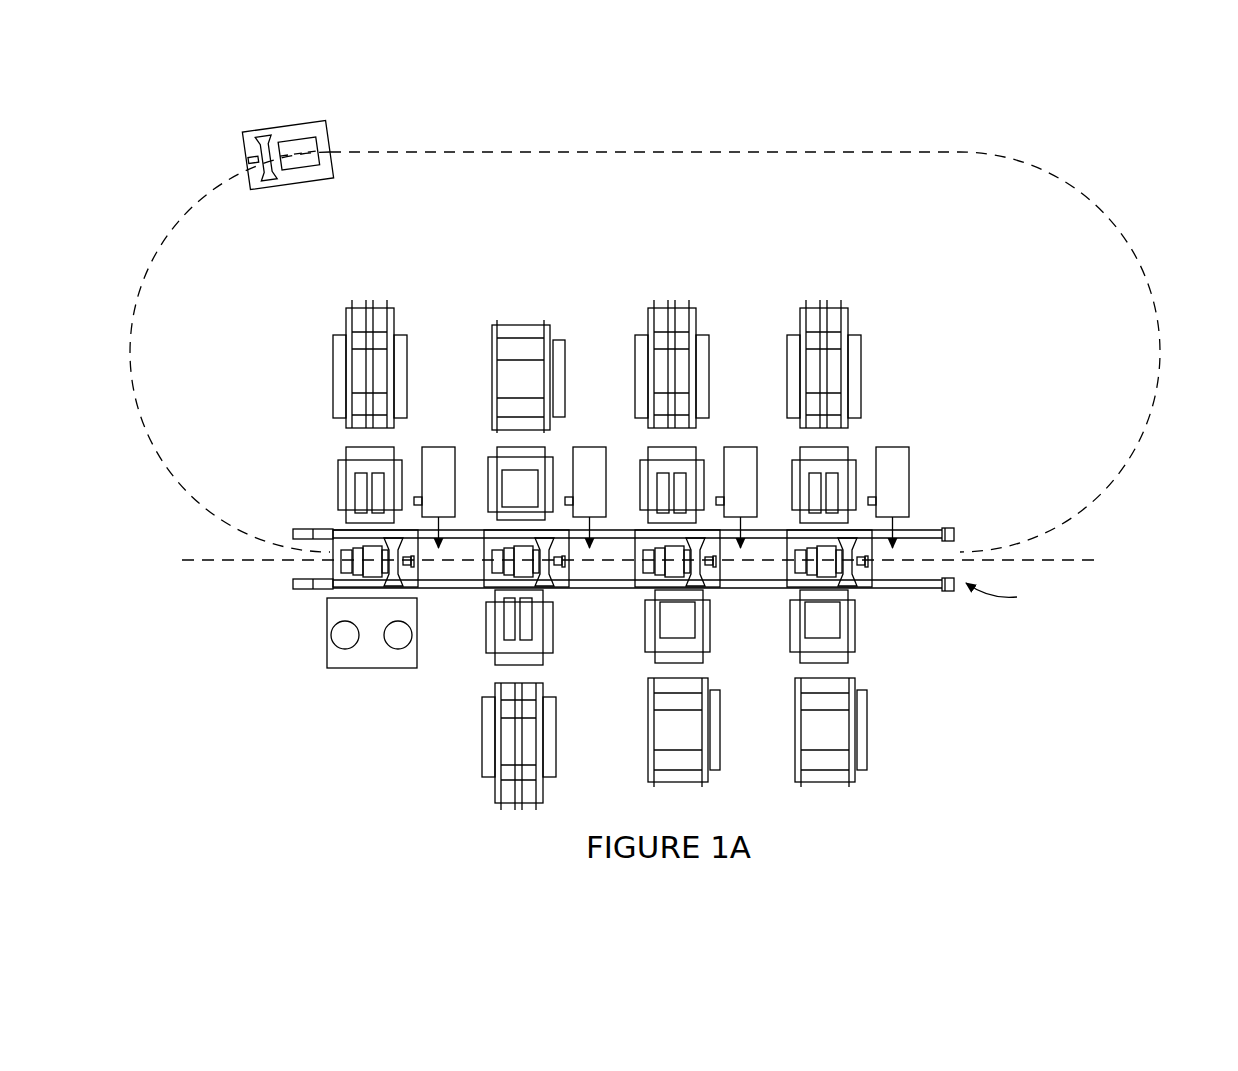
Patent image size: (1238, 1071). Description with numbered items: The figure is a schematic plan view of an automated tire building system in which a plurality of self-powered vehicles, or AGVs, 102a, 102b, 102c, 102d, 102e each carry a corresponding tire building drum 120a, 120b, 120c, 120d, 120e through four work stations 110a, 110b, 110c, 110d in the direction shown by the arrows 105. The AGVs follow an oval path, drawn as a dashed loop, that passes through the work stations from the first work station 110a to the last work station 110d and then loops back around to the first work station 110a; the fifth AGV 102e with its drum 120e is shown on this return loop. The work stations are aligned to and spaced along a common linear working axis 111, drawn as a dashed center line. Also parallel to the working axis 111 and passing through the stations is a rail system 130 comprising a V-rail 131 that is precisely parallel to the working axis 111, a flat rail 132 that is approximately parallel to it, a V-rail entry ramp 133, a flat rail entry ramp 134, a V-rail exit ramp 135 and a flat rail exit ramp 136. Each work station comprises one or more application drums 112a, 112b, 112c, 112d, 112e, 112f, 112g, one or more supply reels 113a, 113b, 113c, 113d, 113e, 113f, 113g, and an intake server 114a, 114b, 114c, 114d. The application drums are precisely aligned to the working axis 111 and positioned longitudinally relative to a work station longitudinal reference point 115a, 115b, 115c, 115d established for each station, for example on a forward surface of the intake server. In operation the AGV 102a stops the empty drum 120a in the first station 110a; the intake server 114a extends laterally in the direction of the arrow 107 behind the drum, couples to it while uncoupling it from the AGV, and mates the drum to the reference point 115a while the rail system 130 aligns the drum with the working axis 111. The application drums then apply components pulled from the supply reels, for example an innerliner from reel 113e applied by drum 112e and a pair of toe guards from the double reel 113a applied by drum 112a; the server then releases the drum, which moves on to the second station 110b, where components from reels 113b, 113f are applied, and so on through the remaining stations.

The self-powered vehicle (AGV) 102a is at (866, 585).
The self-powered vehicle (AGV) 102b is at (710, 585).
The self-powered vehicle (AGV) 102c is at (560, 585).
The self-powered vehicle (AGV) 102d is at (408, 582).
The self-powered vehicle (AGV) 102e is at (304, 126).
The arrows 105 is at (146, 322).
The arrow 107 is at (455, 537).
The first work station 110a is at (878, 362).
The second work station 110b is at (706, 358).
The work station 110c is at (560, 354).
The last work station 110d is at (404, 358).
The working axis 111 is at (235, 566).
The application drum 112a is at (848, 447).
The application drum 112b is at (695, 447).
The application drum 112c is at (548, 447).
The application drum 112d is at (392, 447).
The application drum 112e is at (860, 652).
The application drum 112f is at (707, 652).
The application drum 112g is at (553, 652).
The supply reel 113a is at (848, 318).
The supply reel 113b is at (696, 312).
The supply reel 113c is at (550, 328).
The supply reel 113d is at (395, 316).
The supply reel 113e is at (857, 782).
The supply reel 113f is at (705, 782).
The supply reel 113g is at (543, 802).
The intake server 114a is at (900, 447).
The intake server 114b is at (740, 447).
The intake server 114c is at (590, 447).
The intake server 114d is at (438, 447).
The work station longitudinal reference point 115a is at (876, 500).
The work station longitudinal reference point 115b is at (724, 500).
The work station longitudinal reference point 115c is at (572, 500).
The work station longitudinal reference point 115d is at (421, 505).
The tire building drum 120a is at (800, 572).
The tire building drum 120b is at (648, 572).
The tire building drum 120c is at (497, 572).
The tire building drum 120d is at (347, 572).
The tire building drum 120e is at (299, 178).
The rail system 130 is at (1009, 596).
The V-rail 131 is at (930, 528).
The flat rail 132 is at (907, 590).
The V-rail entry ramp 133 is at (955, 540).
The flat rail entry ramp 134 is at (955, 592).
The V-rail exit ramp 135 is at (312, 529).
The flat rail exit ramp 136 is at (298, 589).